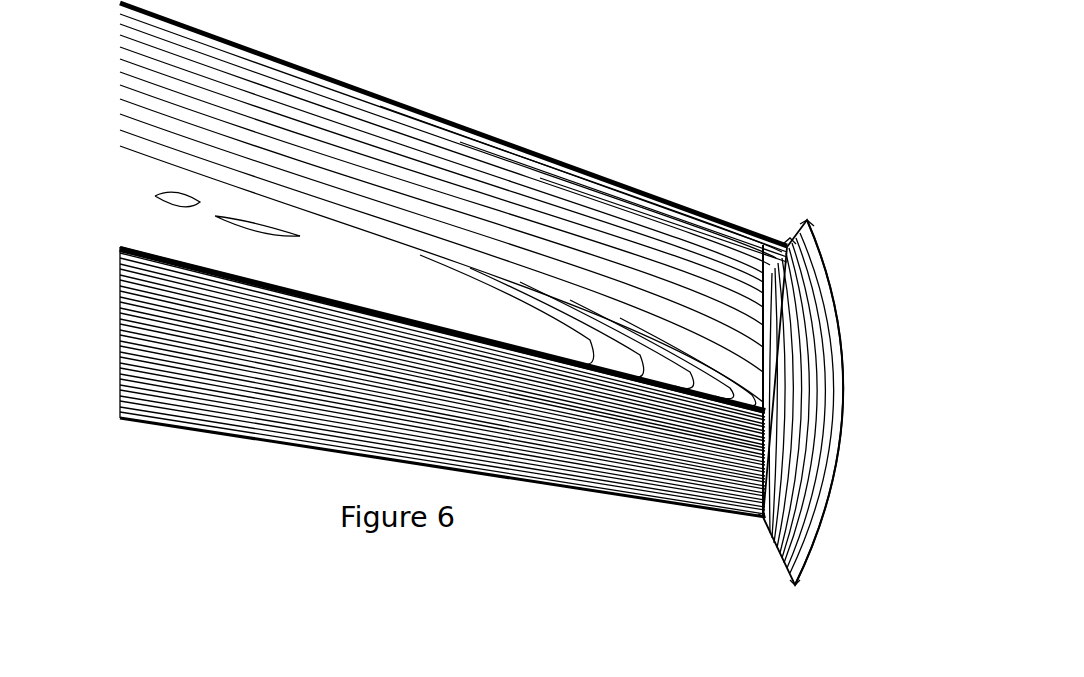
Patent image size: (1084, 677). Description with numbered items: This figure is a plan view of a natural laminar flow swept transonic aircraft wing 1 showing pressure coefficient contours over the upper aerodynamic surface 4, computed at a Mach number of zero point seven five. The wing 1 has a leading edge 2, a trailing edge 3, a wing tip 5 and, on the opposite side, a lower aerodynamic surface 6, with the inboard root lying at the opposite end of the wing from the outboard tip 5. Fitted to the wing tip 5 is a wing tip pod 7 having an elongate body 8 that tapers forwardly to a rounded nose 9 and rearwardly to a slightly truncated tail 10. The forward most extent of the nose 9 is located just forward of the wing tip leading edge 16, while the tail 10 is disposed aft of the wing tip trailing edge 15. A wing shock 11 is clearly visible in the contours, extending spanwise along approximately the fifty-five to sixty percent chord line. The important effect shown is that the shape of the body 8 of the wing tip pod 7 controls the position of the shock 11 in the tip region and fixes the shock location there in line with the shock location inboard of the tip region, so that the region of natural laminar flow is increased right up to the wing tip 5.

The wing 1 is at (750, 104).
The leading edge 2 is at (585, 170).
The trailing edge 3 is at (503, 480).
The upper aerodynamic surface 4 is at (400, 208).
The wing tip 5 is at (765, 328).
The lower aerodynamic surface 6 is at (463, 0).
The wing tip pod 7 is at (842, 230).
The elongate body 8 is at (818, 425).
The nose 9 is at (808, 214).
The tail 10 is at (790, 596).
The wing shock 11 is at (200, 280).
The wing tip trailing edge 15 is at (758, 520).
The wing tip leading edge 16 is at (788, 236).